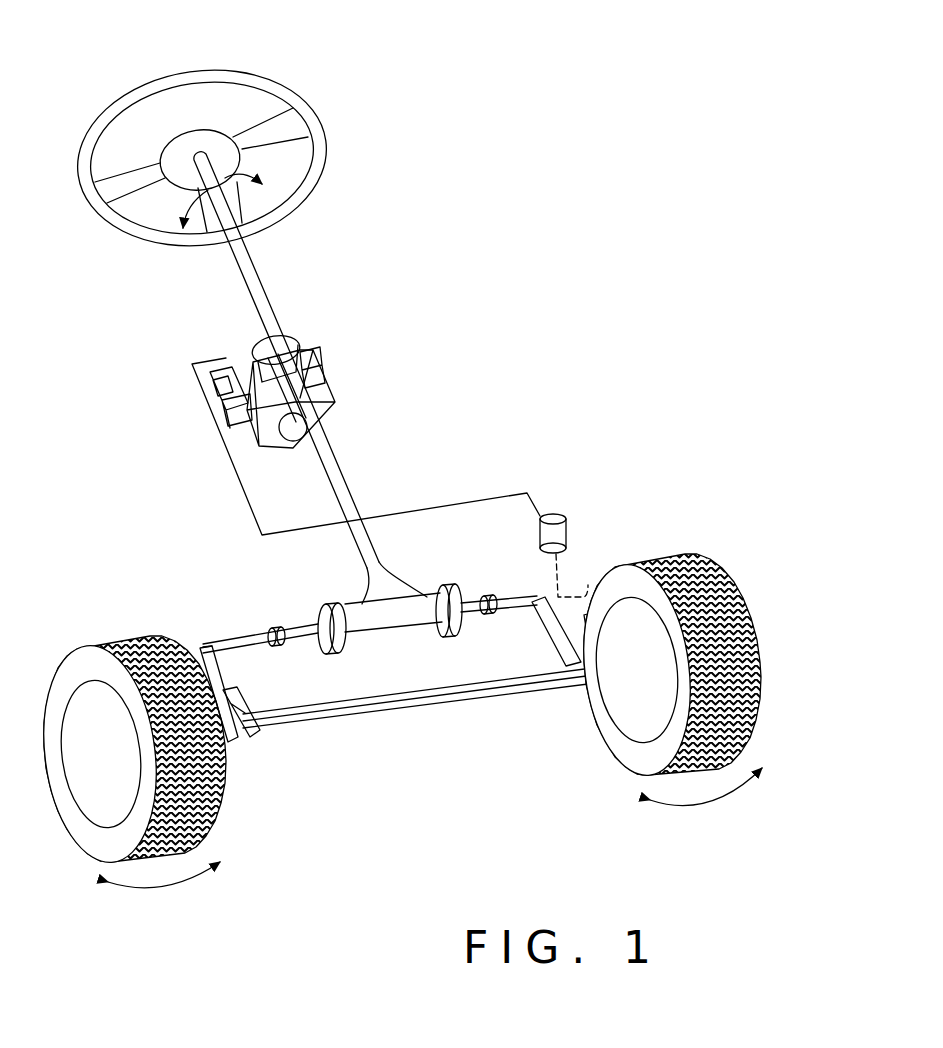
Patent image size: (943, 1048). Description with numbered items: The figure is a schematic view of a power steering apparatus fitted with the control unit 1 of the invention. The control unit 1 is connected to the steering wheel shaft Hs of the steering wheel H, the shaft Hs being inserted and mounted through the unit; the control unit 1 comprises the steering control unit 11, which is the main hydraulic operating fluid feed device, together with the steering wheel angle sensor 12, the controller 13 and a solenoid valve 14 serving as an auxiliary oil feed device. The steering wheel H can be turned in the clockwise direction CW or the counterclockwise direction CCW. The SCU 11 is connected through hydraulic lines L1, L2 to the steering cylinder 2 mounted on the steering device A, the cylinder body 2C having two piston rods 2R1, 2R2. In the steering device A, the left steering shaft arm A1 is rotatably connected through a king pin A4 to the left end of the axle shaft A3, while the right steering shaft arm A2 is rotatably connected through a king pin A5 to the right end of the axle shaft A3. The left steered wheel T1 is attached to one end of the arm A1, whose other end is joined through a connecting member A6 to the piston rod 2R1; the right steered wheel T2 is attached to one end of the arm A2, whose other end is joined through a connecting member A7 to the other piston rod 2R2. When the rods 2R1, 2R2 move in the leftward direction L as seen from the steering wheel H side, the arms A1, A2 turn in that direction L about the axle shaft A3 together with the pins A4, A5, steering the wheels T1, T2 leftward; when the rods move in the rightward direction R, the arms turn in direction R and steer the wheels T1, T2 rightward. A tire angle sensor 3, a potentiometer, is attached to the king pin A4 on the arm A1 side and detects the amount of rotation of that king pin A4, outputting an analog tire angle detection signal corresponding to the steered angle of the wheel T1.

The steering wheel H is at (234, 78).
The steering wheel shaft Hs is at (256, 268).
The clockwise rotation direction CW is at (175, 209).
The counterclockwise rotation direction CCW is at (261, 169).
The control unit 1 is at (334, 408).
The steering control unit 11 is at (330, 392).
The steering wheel angle sensor 12 is at (257, 342).
The controller 13 is at (215, 418).
The solenoid valve 14 is at (310, 343).
The steering cylinder 2 is at (369, 637).
The steering gear cylinder 2C is at (396, 630).
The piston rod 2R1 is at (475, 613).
The piston rod 2R2 is at (300, 643).
The tire angle sensor 3 is at (563, 513).
The hydraulic line L1 is at (370, 563).
The hydraulic line L2 is at (397, 561).
The steering device A is at (397, 687).
The left steering shaft arm A1 is at (560, 674).
The right steering shaft arm A2 is at (268, 705).
The axle shaft A3 is at (392, 712).
The king pin A4 is at (580, 684).
The king pin A5 is at (243, 745).
The connecting member A6 is at (515, 600).
The connecting member A7 is at (215, 642).
The left steered wheel T1 is at (685, 547).
The right steered wheel T2 is at (108, 643).
The leftward direction L is at (448, 819).
The rightward direction R is at (375, 860).